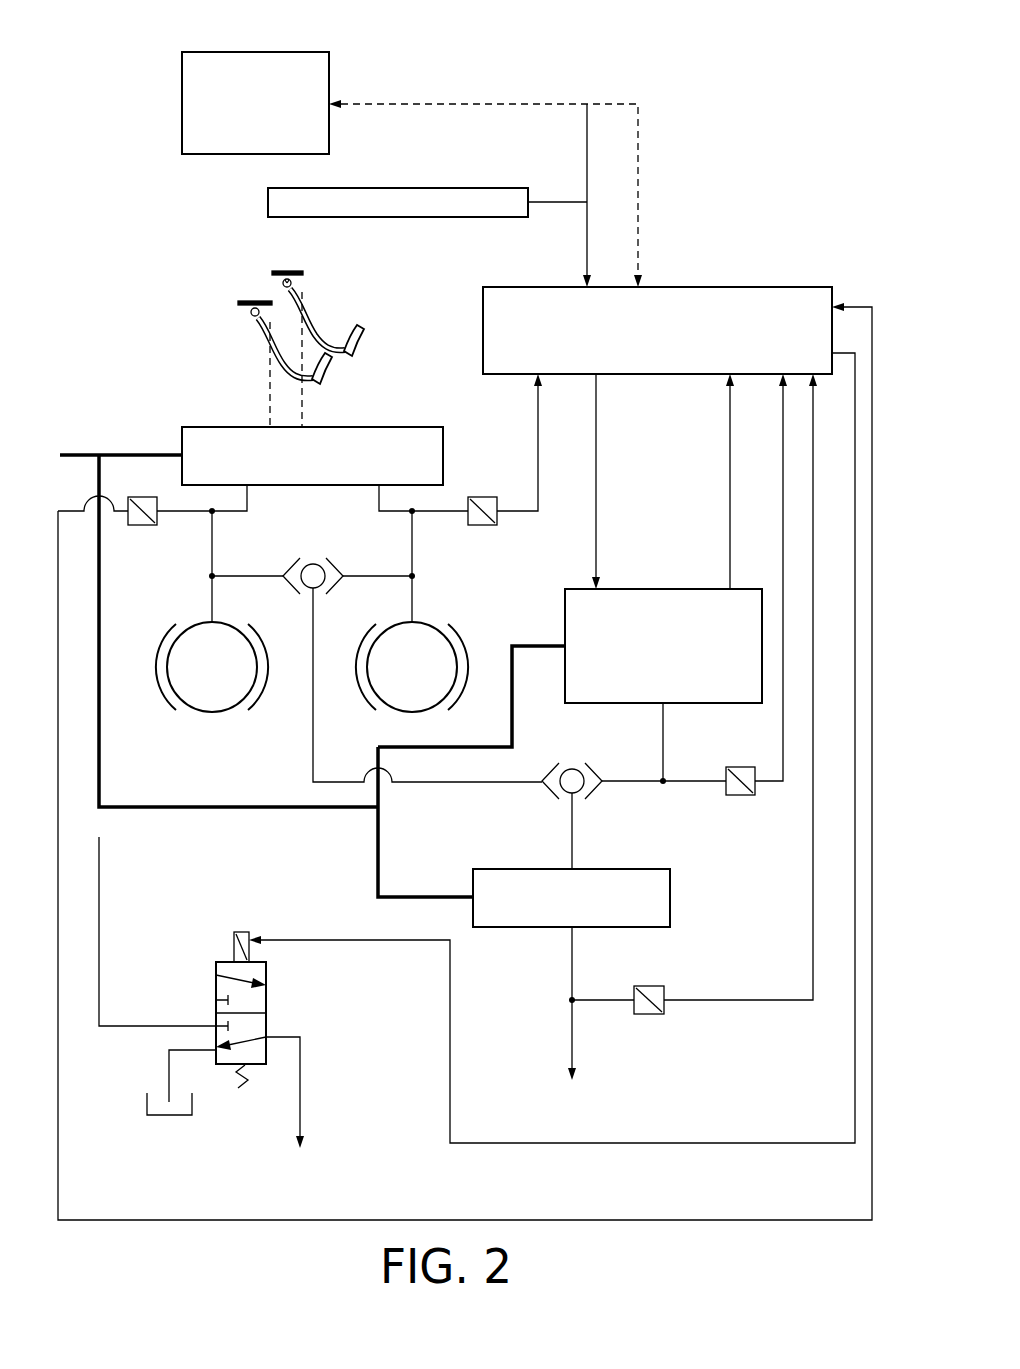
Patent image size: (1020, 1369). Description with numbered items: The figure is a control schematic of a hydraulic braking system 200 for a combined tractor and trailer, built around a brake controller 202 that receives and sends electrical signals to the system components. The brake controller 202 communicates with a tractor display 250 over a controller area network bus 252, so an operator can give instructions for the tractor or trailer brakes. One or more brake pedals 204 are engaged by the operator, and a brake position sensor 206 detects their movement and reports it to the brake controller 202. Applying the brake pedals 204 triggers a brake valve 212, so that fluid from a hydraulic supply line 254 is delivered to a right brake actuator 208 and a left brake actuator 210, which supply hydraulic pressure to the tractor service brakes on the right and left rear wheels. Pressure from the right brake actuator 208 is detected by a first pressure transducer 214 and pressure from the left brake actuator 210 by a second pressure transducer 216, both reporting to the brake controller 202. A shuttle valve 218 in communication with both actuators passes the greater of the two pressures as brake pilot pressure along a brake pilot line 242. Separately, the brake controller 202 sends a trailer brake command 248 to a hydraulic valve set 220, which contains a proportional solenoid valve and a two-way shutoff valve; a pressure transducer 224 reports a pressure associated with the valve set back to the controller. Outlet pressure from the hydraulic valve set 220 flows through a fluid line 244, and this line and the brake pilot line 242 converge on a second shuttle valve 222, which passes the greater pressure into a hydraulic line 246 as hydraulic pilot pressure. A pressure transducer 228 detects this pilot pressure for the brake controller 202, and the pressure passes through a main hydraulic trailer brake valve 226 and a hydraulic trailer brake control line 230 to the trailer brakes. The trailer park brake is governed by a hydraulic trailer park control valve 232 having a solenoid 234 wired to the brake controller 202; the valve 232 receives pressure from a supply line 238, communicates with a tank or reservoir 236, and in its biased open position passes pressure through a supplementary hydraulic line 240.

The hydraulic braking system 200 is at (770, 85).
The tractor display 250 is at (215, 52).
The controller area network (CAN) bus 252 is at (383, 98).
The brake position sensor 206 is at (478, 188).
The brake pedals 204 is at (272, 273).
The brake controller 202 is at (718, 287).
The brake valve 212 is at (386, 427).
The hydraulic supply line 254 is at (78, 455).
The second pressure transducer 216 is at (483, 497).
The first pressure transducer 214 is at (145, 525).
The shuttle valve 218 is at (313, 563).
The right brake actuator 208 is at (212, 712).
The left brake actuator 210 is at (432, 624).
The trailer brake command 248 is at (600, 456).
The hydraulic valve set 220 is at (658, 589).
The second shuttle valve 222 is at (566, 767).
The brake pilot line 242 is at (426, 784).
The fluid line 244 is at (624, 784).
The pressure transducer 224 is at (741, 797).
The hydraulic line 246 is at (572, 828).
The main hydraulic trailer brake valve 226 is at (670, 898).
The hydraulic trailer brake control line 230 is at (572, 1040).
The pressure transducer 228 is at (648, 1014).
The hydraulic trailer park control valve 232 is at (294, 982).
The solenoid 234 is at (234, 950).
The supply line 238 is at (155, 1026).
The supplementary hydraulic line 240 is at (300, 1084).
The tank or reservoir 236 is at (168, 1116).